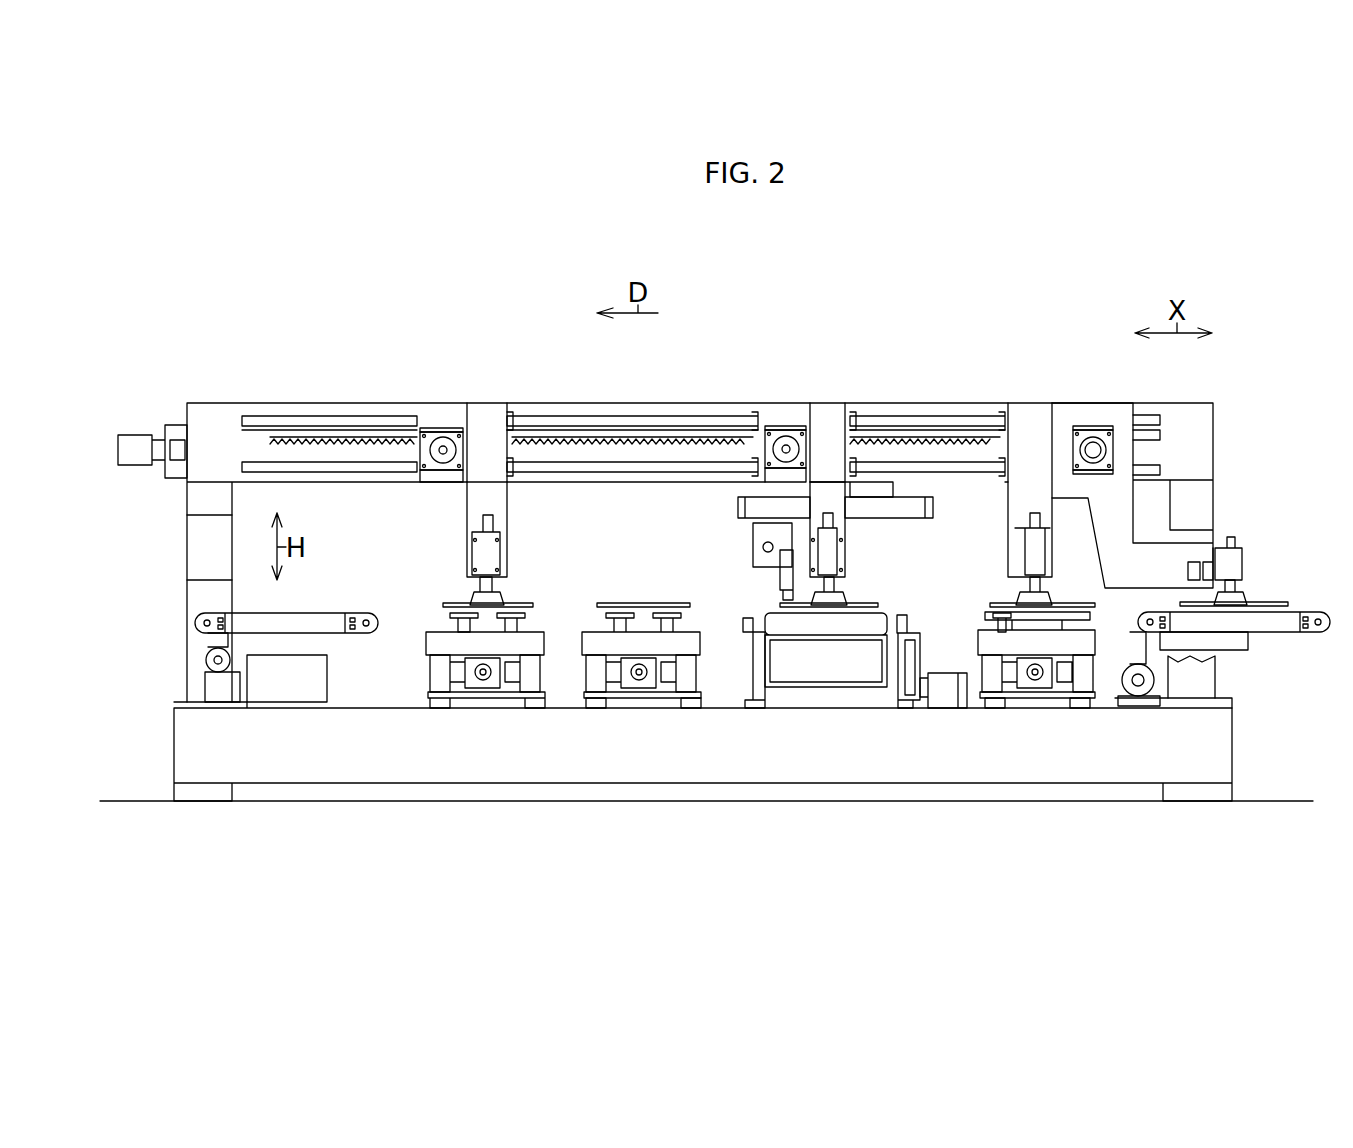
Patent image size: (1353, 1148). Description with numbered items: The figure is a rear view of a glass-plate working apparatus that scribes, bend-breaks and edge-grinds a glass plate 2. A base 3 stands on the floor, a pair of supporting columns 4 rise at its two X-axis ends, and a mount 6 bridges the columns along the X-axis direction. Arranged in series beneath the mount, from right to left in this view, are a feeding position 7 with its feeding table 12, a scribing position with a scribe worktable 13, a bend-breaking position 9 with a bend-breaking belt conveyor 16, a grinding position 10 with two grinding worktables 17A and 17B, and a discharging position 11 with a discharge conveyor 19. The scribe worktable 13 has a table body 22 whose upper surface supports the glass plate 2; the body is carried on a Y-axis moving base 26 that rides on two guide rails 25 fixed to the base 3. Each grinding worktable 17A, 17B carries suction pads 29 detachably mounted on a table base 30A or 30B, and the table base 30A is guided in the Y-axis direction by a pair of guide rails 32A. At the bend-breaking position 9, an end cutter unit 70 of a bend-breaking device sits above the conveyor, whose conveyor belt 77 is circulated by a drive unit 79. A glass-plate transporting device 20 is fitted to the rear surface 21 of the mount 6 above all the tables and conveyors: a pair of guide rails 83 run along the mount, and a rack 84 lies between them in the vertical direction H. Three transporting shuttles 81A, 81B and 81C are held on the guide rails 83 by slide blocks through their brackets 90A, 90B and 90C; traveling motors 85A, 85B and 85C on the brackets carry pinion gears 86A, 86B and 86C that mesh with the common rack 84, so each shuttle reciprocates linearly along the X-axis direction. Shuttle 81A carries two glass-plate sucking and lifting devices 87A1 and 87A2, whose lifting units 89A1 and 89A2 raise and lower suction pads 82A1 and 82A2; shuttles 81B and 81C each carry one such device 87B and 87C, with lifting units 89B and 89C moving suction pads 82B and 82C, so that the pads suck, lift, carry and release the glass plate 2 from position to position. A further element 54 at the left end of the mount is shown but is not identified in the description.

The glass plate 2 is at (527, 603).
The base 3 is at (192, 752).
The supporting columns 4 is at (198, 529).
The mount 6 is at (693, 400).
The feeding position 7 is at (1282, 610).
The bend-breaking position 9 is at (832, 652).
The grinding position 10 is at (563, 635).
The discharging position 11 is at (280, 630).
The feeding table 12 is at (1253, 613).
The scribe worktable 13 is at (1049, 729).
The bend-breaking belt conveyor 16 is at (815, 730).
The grinding worktable 17A is at (632, 730).
The grinding worktable 17B is at (427, 730).
The discharge conveyor 19 is at (258, 612).
The glass-plate transporting device 20 is at (870, 451).
The rear surface 21 is at (578, 410).
The table body 22 is at (989, 625).
The guide rails 25 is at (993, 703).
The Y-axis moving base 26 is at (1028, 645).
The suction pads 29 is at (445, 617).
The table base 30A is at (685, 642).
The table base 30B is at (490, 643).
The guide rails 32A is at (689, 707).
The drive motor 54 is at (140, 445).
The end cutter unit 70 is at (780, 601).
The conveyor belt 77 is at (812, 618).
The drive unit 79 is at (943, 690).
The transporting shuttle 81A is at (1088, 451).
The transporting shuttle 81B is at (830, 425).
The transporting shuttle 81C is at (483, 450).
The suction pads 82A1 is at (1240, 589).
The suction pads 82A2 is at (1028, 600).
The suction pads 82B is at (844, 595).
The suction pads 82C is at (480, 598).
The guide rails 83 is at (300, 472).
The rack 84 is at (348, 434).
The traveling motor 85A is at (1082, 433).
The traveling motor 85B is at (780, 425).
The traveling motor 85C is at (428, 440).
The pinion gear 86A is at (1110, 432).
The pinion gear 86B is at (792, 430).
The pinion gear 86C is at (458, 413).
The glass-plate sucking and lifting device 87A1 is at (1252, 527).
The glass-plate sucking and lifting device 87A2 is at (991, 555).
The glass-plate sucking and lifting device 87B is at (870, 451).
The glass-plate sucking and lifting device 87C is at (481, 464).
The lifting unit 89A1 is at (1230, 565).
The lifting unit 89A2 is at (1030, 555).
The lifting unit 89B is at (835, 550).
The lifting unit 89C is at (483, 545).
The bracket 90A is at (1117, 507).
The bracket 90B is at (852, 442).
The bracket 90C is at (498, 413).